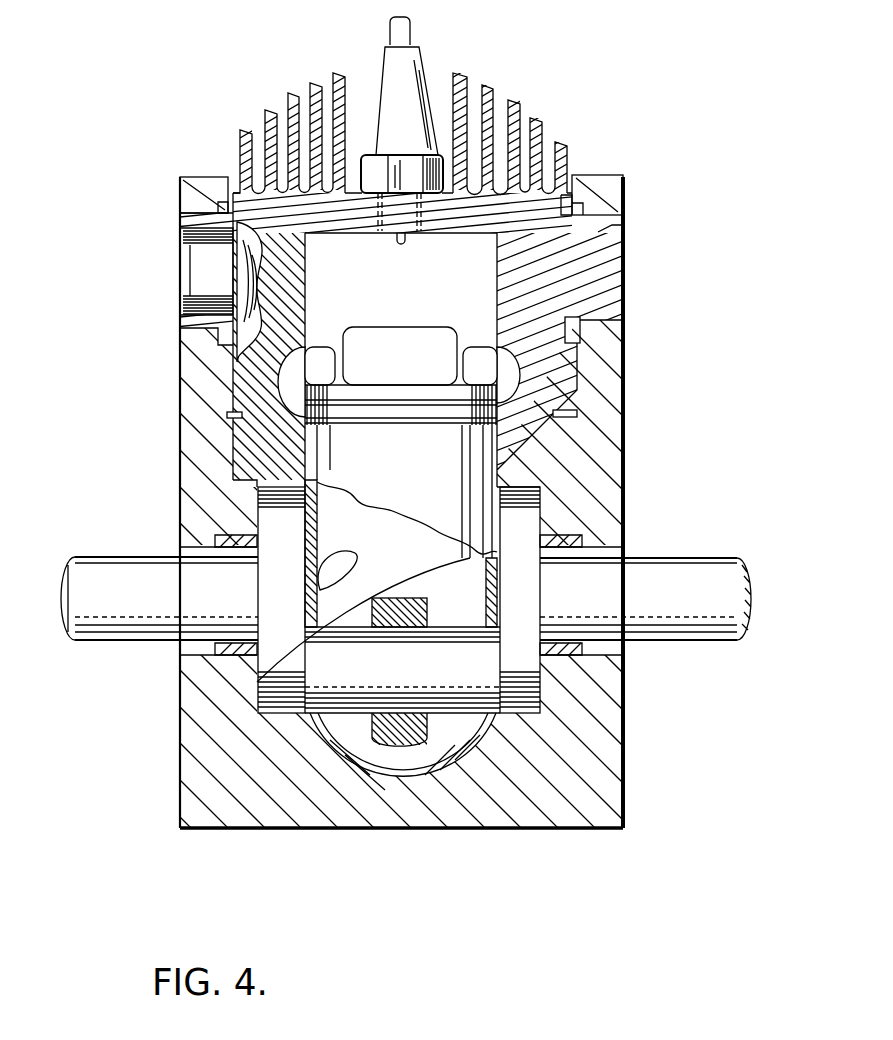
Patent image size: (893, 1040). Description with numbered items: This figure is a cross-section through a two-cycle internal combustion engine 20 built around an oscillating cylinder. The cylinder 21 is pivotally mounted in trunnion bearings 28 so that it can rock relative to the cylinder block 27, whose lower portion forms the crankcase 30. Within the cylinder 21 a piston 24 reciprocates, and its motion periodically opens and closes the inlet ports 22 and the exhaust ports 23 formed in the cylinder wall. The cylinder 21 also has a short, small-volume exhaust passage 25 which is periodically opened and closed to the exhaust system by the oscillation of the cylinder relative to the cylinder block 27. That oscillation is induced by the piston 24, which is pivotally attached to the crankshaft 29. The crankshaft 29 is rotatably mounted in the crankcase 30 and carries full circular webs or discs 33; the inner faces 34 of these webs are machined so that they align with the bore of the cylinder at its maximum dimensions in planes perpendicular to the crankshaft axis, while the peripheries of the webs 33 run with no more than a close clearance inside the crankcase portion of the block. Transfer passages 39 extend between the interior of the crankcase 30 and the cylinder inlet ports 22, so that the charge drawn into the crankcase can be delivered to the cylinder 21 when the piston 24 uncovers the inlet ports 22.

The two-cycle internal combustion engine 20 is at (605, 100).
The cylinder 21 is at (622, 275).
The inlet ports 22 is at (317, 366).
The exhaust ports 23 is at (443, 367).
The piston 24 is at (447, 473).
The exhaust passage 25 is at (440, 326).
The cylinder block 27 is at (605, 178).
The trunnion bearings 28 is at (178, 218).
The crankshaft 29 is at (636, 556).
The crankcase 30 is at (180, 786).
The webs 33 is at (257, 682).
The inner faces 34 is at (320, 560).
The transfer passages 39 is at (298, 400).